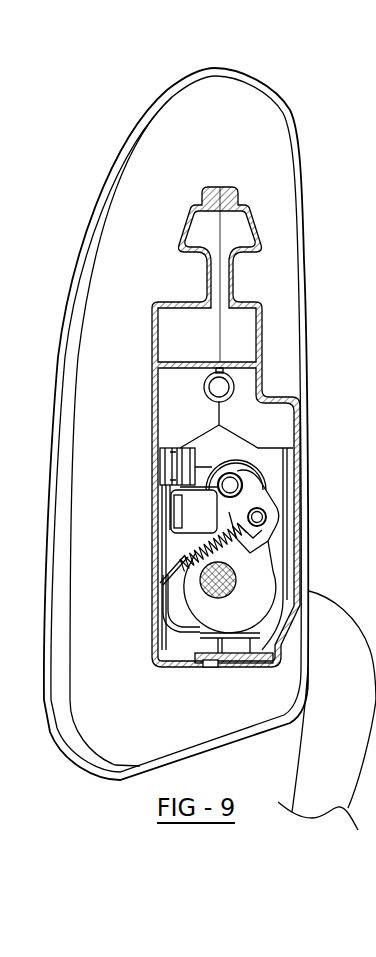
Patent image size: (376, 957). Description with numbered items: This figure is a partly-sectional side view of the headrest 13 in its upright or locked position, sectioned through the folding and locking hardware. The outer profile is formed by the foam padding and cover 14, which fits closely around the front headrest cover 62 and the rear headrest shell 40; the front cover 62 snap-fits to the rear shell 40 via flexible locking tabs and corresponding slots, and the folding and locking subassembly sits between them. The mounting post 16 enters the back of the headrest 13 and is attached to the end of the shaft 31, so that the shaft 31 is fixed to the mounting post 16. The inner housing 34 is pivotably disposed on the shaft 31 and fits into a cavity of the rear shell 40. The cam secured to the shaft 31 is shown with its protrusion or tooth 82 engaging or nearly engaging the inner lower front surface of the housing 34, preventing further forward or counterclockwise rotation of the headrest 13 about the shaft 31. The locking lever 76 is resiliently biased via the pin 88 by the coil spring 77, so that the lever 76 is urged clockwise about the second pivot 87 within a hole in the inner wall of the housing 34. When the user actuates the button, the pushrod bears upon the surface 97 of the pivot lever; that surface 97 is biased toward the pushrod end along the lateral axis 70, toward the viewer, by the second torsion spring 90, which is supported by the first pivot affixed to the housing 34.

The headrest 13 is at (313, 108).
The foam padding and cover 14 is at (122, 152).
The mounting post 16 is at (307, 749).
The shaft 31 is at (219, 598).
The housing 34 is at (257, 648).
The rear headrest shell 40 is at (263, 325).
The front headrest cover 62 is at (152, 325).
The lateral axis 70 is at (237, 575).
The locking lever 76 is at (286, 475).
The coil spring 77 is at (197, 540).
The tooth 82 is at (182, 635).
The second pivot 87 is at (230, 484).
The pin 88 is at (266, 515).
The second torsion spring 90 is at (183, 447).
The surface 97 is at (200, 523).